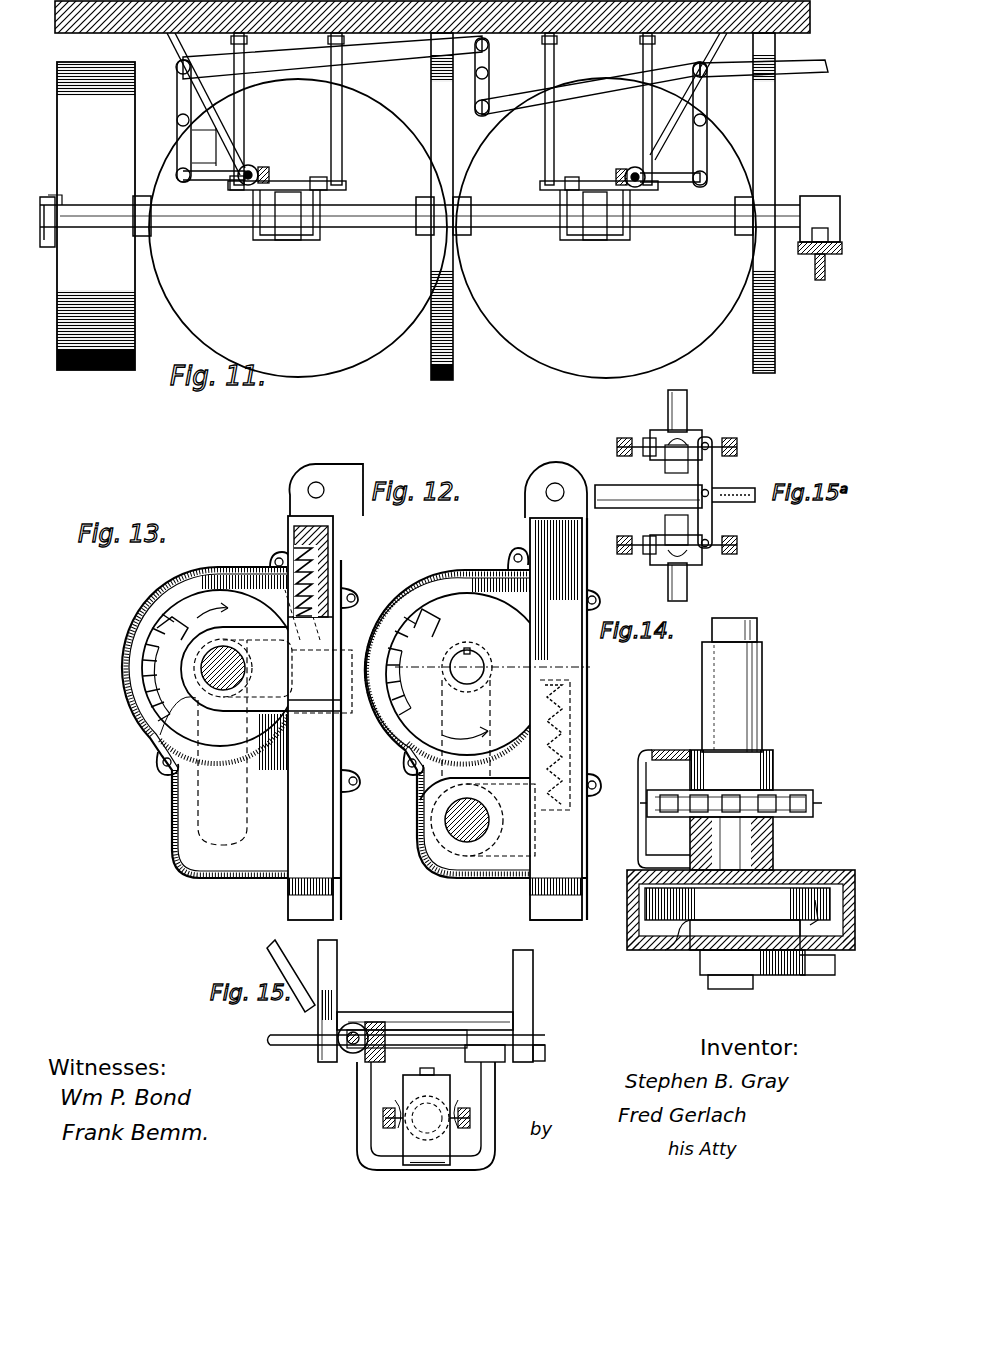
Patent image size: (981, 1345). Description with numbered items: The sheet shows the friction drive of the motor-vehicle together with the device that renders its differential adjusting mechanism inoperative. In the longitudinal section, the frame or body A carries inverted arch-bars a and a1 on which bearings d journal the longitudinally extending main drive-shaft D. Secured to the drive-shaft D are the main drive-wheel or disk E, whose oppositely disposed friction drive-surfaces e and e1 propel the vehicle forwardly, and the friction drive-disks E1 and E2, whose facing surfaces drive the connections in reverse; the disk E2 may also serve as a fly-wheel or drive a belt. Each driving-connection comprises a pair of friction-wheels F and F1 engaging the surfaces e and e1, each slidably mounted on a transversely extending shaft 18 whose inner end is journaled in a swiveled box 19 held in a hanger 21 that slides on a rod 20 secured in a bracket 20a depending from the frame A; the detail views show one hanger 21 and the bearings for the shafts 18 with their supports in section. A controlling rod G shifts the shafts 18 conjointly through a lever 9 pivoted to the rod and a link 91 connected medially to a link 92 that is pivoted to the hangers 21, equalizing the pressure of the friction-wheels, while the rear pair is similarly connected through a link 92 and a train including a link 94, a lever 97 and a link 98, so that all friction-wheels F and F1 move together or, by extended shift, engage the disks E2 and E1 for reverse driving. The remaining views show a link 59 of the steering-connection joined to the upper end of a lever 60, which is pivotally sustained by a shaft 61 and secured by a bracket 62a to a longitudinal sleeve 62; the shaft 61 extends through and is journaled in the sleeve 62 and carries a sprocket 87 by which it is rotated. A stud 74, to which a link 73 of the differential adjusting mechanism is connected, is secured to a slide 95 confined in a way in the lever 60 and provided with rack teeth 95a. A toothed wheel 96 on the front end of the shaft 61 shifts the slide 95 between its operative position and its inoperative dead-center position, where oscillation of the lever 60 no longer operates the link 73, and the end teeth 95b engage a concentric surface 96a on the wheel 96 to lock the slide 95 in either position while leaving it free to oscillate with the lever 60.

In FIG. 11, the frame or body A is at (810, 15).
In FIG. 11, the friction drive-disk E2 is at (96, 216).
In FIG. 11, the friction drive-disk E1 is at (775, 340).
In FIG. 11, the main drive-wheel or disk E is at (440, 380).
In FIG. 11, the main drive-shaft D is at (392, 228).
In FIG. 15A, the main drive-shaft D is at (703, 482).
In FIG. 11, the friction-wheel F is at (298, 228).
In FIG. 11, the friction-wheel F1 is at (606, 228).
In FIG. 11, the rod G is at (815, 73).
In FIG. 11, the inverted arch-bar a is at (825, 280).
In FIG. 11, the inverted arch-bar a1 is at (55, 240).
In FIG. 11, the bearing d is at (55, 195).
In FIG. 11, the friction drive-surface e is at (453, 350).
In FIG. 11, the friction drive-surface e1 is at (431, 352).
In FIG. 11, the lever 9 is at (707, 98).
In FIG. 11, the link 91 is at (680, 182).
In FIG. 15A, the link 91 is at (750, 502).
In FIG. 11, the link 92 is at (250, 165).
In FIG. 15A, the link 92 is at (712, 525).
In FIG. 15, the link 92 is at (378, 1030).
In FIG. 11, the link 94 is at (215, 180).
In FIG. 15, the link 94 is at (350, 1022).
In FIG. 11, the slide 95 is at (183, 120).
In FIG. 13, the slide 95 is at (273, 718).
In FIG. 12, the slide 95 is at (492, 719).
In FIG. 14, the slide 95 is at (665, 950).
In FIG. 11, the toothed wheel 96 is at (395, 60).
In FIG. 13, the toothed wheel 96 is at (182, 713).
In FIG. 12, the toothed wheel 96 is at (467, 678).
In FIG. 14, the toothed wheel 96 is at (737, 904).
In FIG. 11, the lever 97 is at (489, 80).
In FIG. 11, the link 98 is at (620, 68).
In FIG. 11, the rod 20 is at (296, 182).
In FIG. 15A, the rod 20 is at (725, 437).
In FIG. 15, the rod 20 is at (515, 1040).
In FIG. 11, the bracket 20a is at (342, 118).
In FIG. 15A, the bracket 20a is at (735, 554).
In FIG. 15, the bracket 20a is at (533, 968).
In FIG. 11, the hanger 21 is at (320, 200).
In FIG. 15A, the hanger 21 is at (648, 438).
In FIG. 15, the hanger 21 is at (495, 1090).
In FIG. 15A, the shaft 18 is at (687, 400).
In FIG. 15, the shaft 18 is at (400, 1090).
In FIG. 15, the swiveled box 19 is at (393, 1122).
In FIG. 13, the link 59 is at (350, 475).
In FIG. 12, the link 59 is at (556, 490).
In FIG. 13, the lever 60 is at (241, 730).
In FIG. 12, the lever 60 is at (483, 726).
In FIG. 14, the lever 60 is at (741, 898).
In FIG. 12, the shaft 61 is at (472, 665).
In FIG. 14, the shaft 61 is at (757, 625).
In FIG. 14, the sleeve 62 is at (762, 680).
In FIG. 14, the bracket 62a is at (660, 750).
In FIG. 13, the link 73 is at (324, 726).
In FIG. 12, the link 73 is at (470, 880).
In FIG. 14, the link 73 is at (810, 975).
In FIG. 13, the stud 74 is at (245, 668).
In FIG. 12, the stud 74 is at (455, 828).
In FIG. 14, the stud 74 is at (712, 989).
In FIG. 14, the sprocket 87 is at (731, 803).
In FIG. 13, the rack teeth 95a is at (328, 572).
In FIG. 12, the rack teeth 95a is at (570, 722).
In FIG. 14, the rack teeth 95a is at (645, 745).
In FIG. 13, the end teeth 95b is at (333, 527).
In FIG. 12, the end teeth 95b is at (587, 667).
In FIG. 14, the end teeth 95b is at (630, 830).
In FIG. 13, the concentric surface 96a is at (262, 742).
In FIG. 12, the concentric surface 96a is at (530, 625).